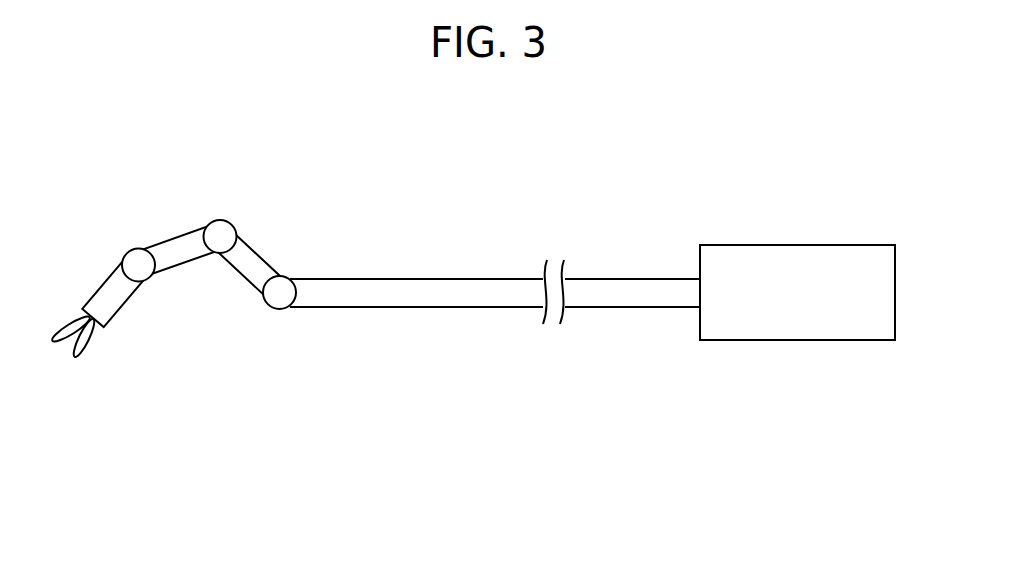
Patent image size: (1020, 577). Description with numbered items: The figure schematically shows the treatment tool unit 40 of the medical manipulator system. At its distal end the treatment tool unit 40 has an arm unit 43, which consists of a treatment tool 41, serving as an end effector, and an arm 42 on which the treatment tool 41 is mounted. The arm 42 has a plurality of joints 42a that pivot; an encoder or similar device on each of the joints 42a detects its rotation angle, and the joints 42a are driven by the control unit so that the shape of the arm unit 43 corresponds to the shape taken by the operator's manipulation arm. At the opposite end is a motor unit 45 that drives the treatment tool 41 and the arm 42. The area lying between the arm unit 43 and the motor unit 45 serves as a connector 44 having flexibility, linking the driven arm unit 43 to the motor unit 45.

The treatment tool unit 40 is at (618, 224).
The treatment tool 41 is at (113, 315).
The arm 42 is at (223, 269).
The joints 42a is at (220, 222).
The arm unit 43 is at (240, 396).
The connector 44 is at (433, 307).
The motor unit 45 is at (807, 334).